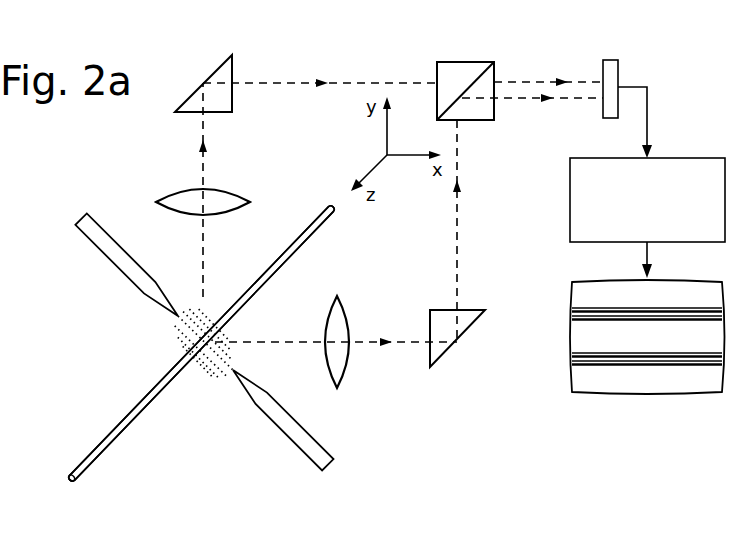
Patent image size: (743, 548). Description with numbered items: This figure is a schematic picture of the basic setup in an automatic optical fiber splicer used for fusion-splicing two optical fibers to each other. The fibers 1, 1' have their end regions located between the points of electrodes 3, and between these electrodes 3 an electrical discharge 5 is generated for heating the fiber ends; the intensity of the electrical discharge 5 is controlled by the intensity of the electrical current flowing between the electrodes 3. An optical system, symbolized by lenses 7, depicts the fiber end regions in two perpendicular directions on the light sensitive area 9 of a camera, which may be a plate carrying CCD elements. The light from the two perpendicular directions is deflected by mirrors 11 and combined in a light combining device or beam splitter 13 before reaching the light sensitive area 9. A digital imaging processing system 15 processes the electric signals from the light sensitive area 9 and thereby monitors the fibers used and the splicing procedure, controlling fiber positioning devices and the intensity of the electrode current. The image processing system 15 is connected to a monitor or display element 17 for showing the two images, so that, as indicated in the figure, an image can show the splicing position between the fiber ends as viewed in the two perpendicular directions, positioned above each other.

The optical fiber 1 is at (200, 344).
The optical fiber 1' is at (201, 343).
The electrodes 3 is at (125, 255).
The electrical discharge 5 is at (192, 310).
The lenses 7 is at (183, 195).
The light sensitive area 9 is at (618, 72).
The mirrors 11 is at (478, 113).
The beam splitter 13 is at (233, 73).
The digital imaging processing system 15 is at (687, 158).
The display element 17 is at (578, 380).